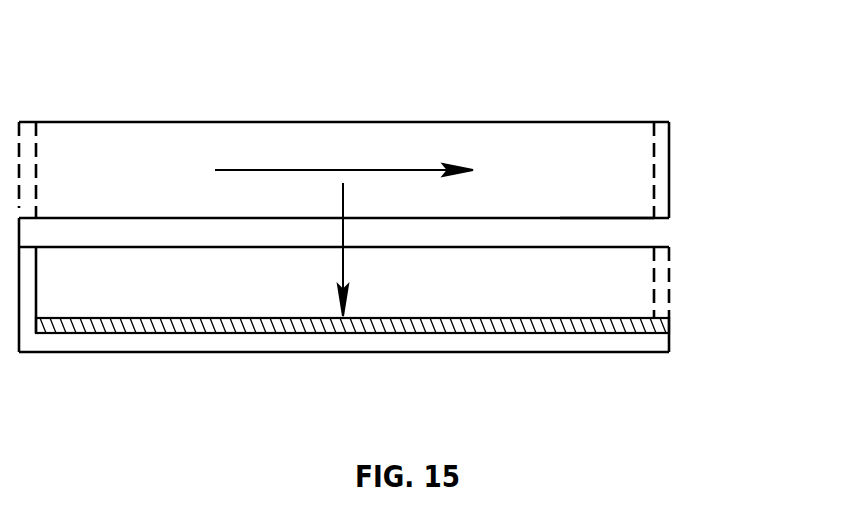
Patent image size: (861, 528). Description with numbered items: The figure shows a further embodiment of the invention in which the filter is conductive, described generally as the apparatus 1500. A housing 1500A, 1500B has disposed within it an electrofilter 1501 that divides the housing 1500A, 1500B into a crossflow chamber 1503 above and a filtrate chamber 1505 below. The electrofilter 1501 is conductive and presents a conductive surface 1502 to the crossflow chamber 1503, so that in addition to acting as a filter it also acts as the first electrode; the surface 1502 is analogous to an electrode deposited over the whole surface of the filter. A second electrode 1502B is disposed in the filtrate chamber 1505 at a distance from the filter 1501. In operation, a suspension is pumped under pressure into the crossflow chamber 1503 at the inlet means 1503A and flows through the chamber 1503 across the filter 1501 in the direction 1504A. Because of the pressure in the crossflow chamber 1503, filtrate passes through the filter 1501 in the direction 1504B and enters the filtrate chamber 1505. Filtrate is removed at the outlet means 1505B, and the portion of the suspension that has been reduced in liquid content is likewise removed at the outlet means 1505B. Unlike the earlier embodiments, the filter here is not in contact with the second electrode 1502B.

The apparatus 1500 is at (388, 226).
The housing 1500A is at (627, 121).
The housing 1500B is at (182, 340).
The electrofilter 1501 is at (633, 233).
The conductive surface 1502 is at (575, 217).
The second electrode 1502B is at (557, 327).
The crossflow chamber 1503 is at (571, 173).
The inlet means 1503A is at (37, 152).
The direction of crossflow 1504A is at (262, 170).
The direction of filtrate flow 1504B is at (350, 283).
The filtrate chamber 1505 is at (573, 288).
The outlet means 1505B is at (669, 292).